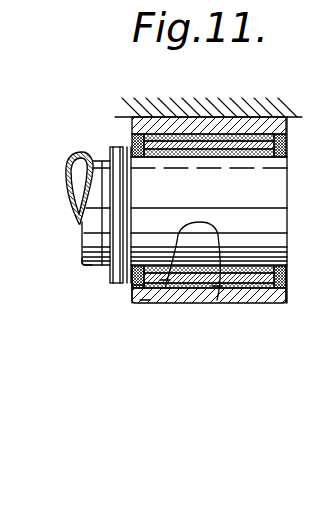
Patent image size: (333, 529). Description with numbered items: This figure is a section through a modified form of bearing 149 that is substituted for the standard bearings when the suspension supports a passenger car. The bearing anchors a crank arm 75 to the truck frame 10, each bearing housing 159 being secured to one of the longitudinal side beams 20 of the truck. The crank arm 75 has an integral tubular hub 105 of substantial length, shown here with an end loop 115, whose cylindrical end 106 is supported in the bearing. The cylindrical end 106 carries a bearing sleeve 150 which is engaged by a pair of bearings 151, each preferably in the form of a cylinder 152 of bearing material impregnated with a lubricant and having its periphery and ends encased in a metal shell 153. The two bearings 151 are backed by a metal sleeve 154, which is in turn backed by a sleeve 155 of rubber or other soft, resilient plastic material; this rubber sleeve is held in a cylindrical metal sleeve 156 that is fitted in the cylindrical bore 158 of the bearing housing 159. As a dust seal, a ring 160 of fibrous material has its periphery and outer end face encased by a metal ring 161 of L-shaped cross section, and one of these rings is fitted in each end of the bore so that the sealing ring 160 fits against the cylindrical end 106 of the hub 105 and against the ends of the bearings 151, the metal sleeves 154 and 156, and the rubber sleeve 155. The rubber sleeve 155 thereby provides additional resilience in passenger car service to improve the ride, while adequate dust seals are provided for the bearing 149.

The truck frame 10 is at (300, 117).
The longitudinal side beam 20 is at (124, 117).
The crank arm 75 is at (90, 270).
The tubular hub 105 is at (88, 226).
The cylindrical end 106 is at (289, 207).
The loop handle 115 is at (82, 186).
The bearing 149 is at (275, 307).
The bearing sleeve 150 is at (284, 268).
The bearing 151 is at (195, 254).
The cylinder 152 is at (178, 148).
The metal shell 153 is at (239, 150).
The metal sleeve 154 is at (217, 300).
The sleeve of rubber 155 is at (228, 122).
The cylindrical metal sleeve 156 is at (165, 288).
The cylindrical bore 158 is at (133, 290).
The bearing housing 159 is at (143, 303).
The ring of fibrous material 160 is at (134, 134).
The metal ring 161 is at (135, 143).